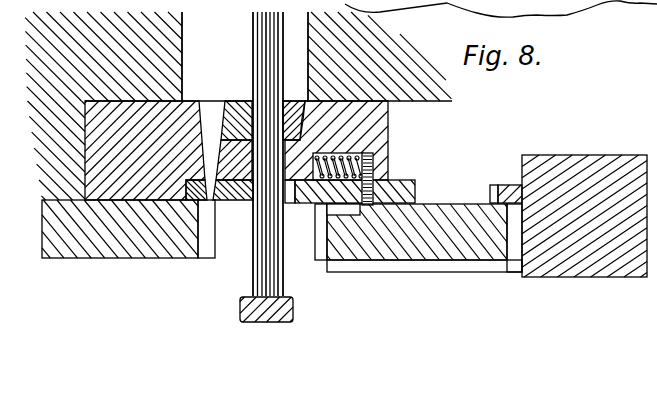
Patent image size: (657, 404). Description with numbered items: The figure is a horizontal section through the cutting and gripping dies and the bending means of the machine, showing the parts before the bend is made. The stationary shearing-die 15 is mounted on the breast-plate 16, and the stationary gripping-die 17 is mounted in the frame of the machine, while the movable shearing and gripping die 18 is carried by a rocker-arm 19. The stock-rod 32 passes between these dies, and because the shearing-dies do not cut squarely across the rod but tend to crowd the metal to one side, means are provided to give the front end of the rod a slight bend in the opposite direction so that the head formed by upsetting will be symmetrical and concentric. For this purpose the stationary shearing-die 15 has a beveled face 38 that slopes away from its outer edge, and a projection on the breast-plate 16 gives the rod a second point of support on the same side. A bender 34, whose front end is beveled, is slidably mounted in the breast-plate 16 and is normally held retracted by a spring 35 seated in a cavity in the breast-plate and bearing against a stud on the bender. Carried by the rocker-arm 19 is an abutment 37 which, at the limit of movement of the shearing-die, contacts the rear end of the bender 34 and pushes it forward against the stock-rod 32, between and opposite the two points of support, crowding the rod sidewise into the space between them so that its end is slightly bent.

The stationary shearing-die 15 is at (240, 200).
The breast-plate 16 is at (372, 123).
The stationary gripping-die 17 is at (168, 243).
The movable shearing and gripping die 18 is at (418, 250).
The rocker-arm 19 is at (568, 165).
The stock-rod 32 is at (268, 53).
The bender 34 is at (400, 183).
The spring 35 is at (372, 155).
The abutment 37 is at (503, 185).
The beveled face 38 is at (251, 181).